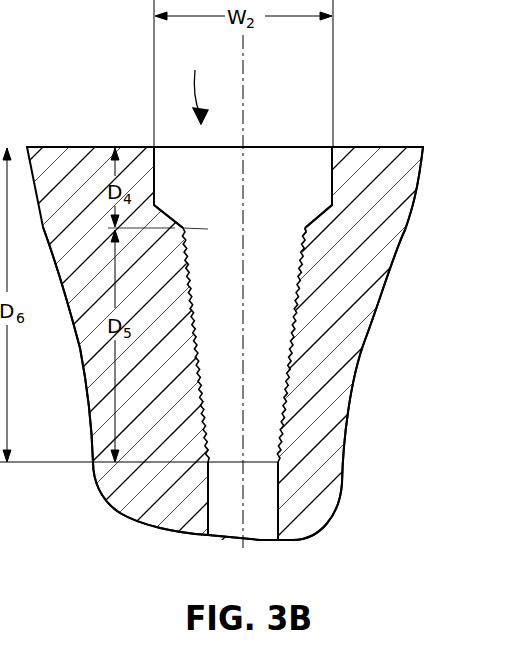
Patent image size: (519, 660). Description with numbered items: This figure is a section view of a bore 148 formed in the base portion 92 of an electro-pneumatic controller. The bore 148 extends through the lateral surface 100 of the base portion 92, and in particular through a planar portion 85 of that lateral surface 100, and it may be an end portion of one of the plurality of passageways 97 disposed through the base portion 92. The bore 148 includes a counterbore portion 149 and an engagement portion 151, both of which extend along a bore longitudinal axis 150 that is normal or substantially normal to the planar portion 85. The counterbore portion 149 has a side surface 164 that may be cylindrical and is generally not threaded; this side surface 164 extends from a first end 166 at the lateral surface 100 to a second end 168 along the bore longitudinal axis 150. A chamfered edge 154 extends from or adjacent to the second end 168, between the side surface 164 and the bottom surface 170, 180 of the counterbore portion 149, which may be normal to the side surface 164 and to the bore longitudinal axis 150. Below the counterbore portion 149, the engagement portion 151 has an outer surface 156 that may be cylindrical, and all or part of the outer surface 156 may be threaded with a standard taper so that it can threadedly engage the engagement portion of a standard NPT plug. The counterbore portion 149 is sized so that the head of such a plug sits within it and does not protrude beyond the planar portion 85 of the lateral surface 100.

The planar portion 85 is at (374, 147).
The lateral surface 100 is at (350, 147).
The bore 148 is at (195, 86).
The bore longitudinal axis 150 is at (244, 97).
The side surface 164 is at (421, 156).
The counterbore portion 149 is at (333, 183).
The chamfered edge 154 is at (323, 215).
The bottom surface 180 is at (310, 231).
The base portion 92 is at (353, 288).
The outer surface 156 is at (293, 348).
The engagement portion 151 is at (288, 390).
The passageway 97 is at (258, 503).
The first end 166 is at (176, 147).
The second end 168 is at (180, 225).
The bottom surface 170 is at (185, 227).